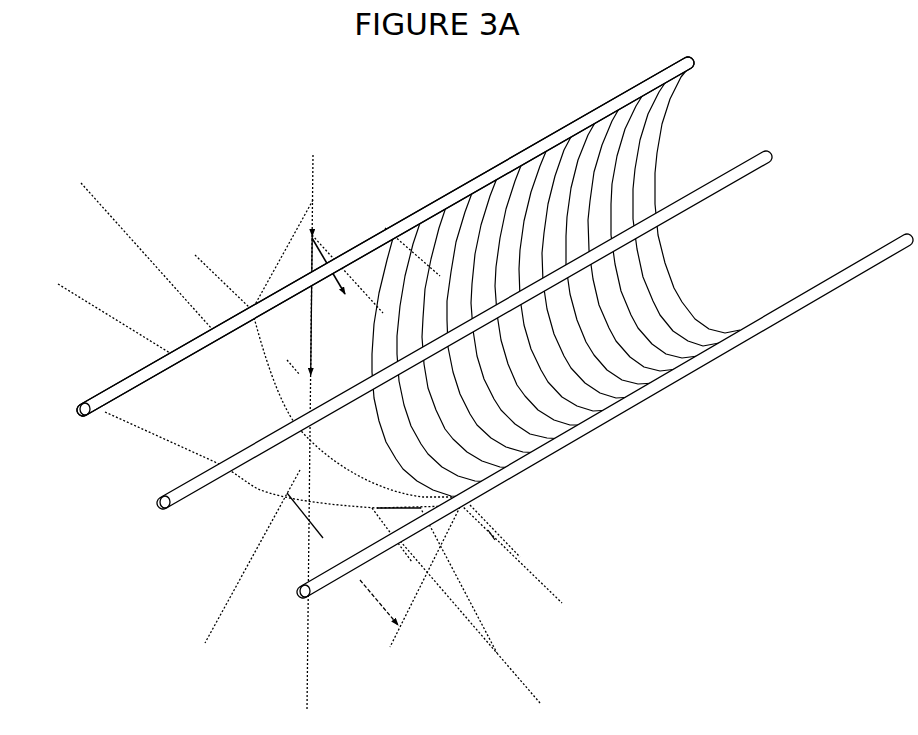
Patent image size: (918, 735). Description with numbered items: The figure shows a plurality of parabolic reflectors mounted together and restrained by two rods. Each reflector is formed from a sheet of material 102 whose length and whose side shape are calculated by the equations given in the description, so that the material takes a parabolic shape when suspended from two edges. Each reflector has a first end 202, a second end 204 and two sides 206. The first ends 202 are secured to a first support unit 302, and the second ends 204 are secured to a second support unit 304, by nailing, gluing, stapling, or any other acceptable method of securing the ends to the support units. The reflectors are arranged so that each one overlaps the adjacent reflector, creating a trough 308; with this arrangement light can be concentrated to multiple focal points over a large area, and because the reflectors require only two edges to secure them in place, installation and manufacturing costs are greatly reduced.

The sheet of material 102 is at (218, 442).
The first end 202 is at (188, 342).
The second end 204 is at (466, 499).
The sides 206 is at (244, 491).
The first support unit 302 is at (128, 361).
The second support unit 304 is at (640, 414).
The trough 308 is at (752, 202).